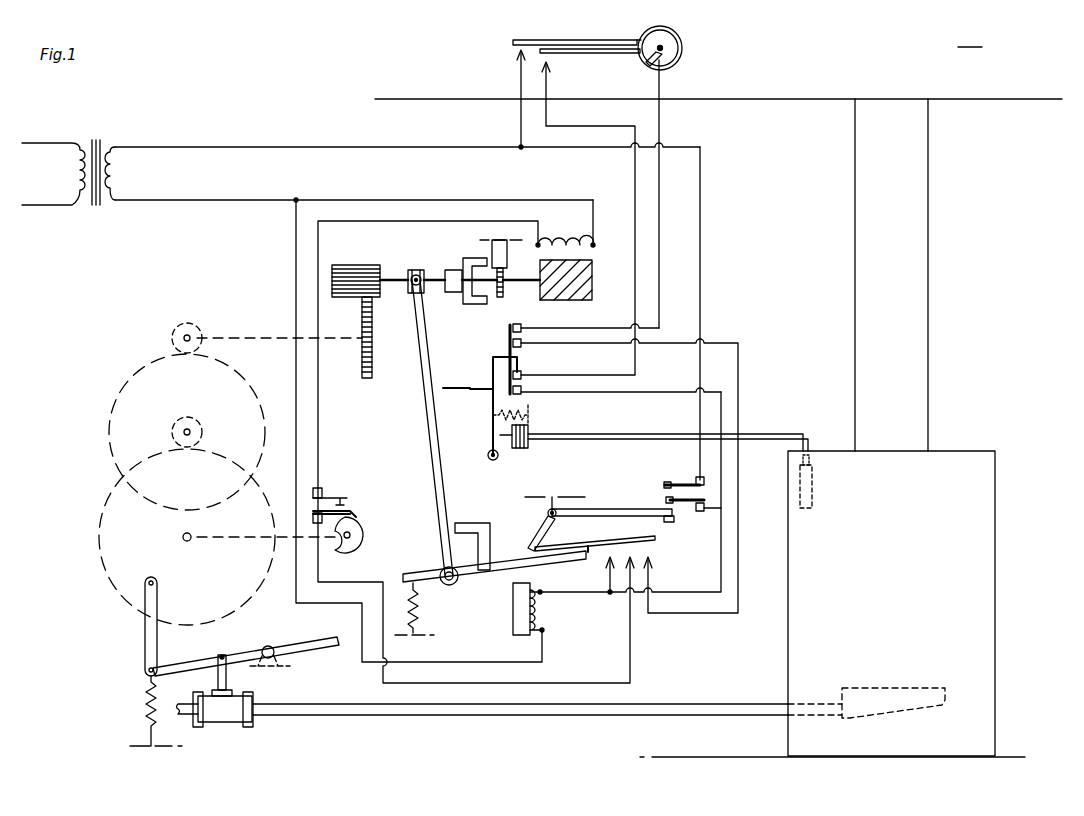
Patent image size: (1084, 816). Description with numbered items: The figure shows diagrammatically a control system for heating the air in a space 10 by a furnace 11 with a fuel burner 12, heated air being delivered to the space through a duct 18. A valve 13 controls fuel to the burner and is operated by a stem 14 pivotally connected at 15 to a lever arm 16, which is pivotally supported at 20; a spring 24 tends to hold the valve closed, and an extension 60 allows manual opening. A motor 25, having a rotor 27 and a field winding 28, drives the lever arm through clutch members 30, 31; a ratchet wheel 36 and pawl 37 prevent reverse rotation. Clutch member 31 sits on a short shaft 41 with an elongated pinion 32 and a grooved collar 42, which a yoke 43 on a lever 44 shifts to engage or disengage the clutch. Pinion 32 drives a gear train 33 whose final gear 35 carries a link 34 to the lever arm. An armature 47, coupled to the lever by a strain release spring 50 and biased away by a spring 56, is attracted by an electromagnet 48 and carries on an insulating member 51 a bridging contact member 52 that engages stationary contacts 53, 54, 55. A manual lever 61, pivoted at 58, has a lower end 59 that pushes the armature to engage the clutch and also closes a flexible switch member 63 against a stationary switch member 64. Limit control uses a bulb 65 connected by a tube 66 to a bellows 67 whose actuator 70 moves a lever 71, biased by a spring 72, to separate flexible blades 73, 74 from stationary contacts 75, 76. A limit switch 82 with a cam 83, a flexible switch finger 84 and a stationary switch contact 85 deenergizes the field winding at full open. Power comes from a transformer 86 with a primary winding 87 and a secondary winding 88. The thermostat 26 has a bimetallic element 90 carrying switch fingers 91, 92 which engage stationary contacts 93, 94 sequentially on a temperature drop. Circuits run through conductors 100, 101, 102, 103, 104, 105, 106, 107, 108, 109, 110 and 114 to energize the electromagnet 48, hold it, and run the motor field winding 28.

The space 10 is at (970, 39).
The furnace 11 is at (990, 518).
The fuel burner 12 is at (840, 690).
The valve 13 is at (228, 724).
The stem 14 is at (226, 678).
The pivotal connection 15 is at (222, 655).
The lever arm 16 is at (173, 662).
The duct 18 is at (930, 265).
The pivot 20 is at (274, 646).
The spring 24 is at (144, 706).
The motor 25 is at (612, 252).
The thermostat 26 is at (720, 43).
The rotor 27 is at (557, 301).
The field winding 28 is at (555, 243).
The clutch member 30 is at (474, 304).
The clutch member 31 is at (450, 292).
The elongated pinion 32 is at (358, 264).
The gear train 33 is at (235, 406).
The link 34 is at (144, 636).
The final gear 35 is at (100, 515).
The ratchet wheel 36 is at (503, 305).
The pawl 37 is at (507, 249).
The short shaft 41 is at (398, 285).
The grooved collar 42 is at (422, 270).
The yoke 43 is at (416, 270).
The lever 44 is at (426, 400).
The armature 47 is at (500, 576).
The electromagnet 48 is at (518, 637).
The strain release spring 50 is at (440, 572).
The insulating member 51 is at (591, 560).
The bridging contact member 52 is at (655, 537).
The stationary contact 53 is at (618, 574).
The stationary contact 54 is at (639, 569).
The stationary contact 55 is at (653, 556).
The spring 56 is at (420, 607).
The pivot 58 is at (557, 518).
The lower end 59 is at (533, 532).
The extension 60 is at (319, 652).
The manually operable lever 61 is at (609, 503).
The flexible switch member 63 is at (664, 476).
The stationary switch member 64 is at (683, 481).
The bulb 65 is at (814, 476).
The tube 66 is at (616, 436).
The bellows 67 is at (521, 461).
The actuator 70 is at (499, 466).
The lever 71 is at (490, 401).
The spring 72 is at (523, 401).
The flexible blade 73 is at (524, 390).
The flexible blade 74 is at (524, 336).
The stationary contact 75 is at (524, 373).
The stationary contact 76 is at (524, 350).
The limit switch 82 is at (369, 466).
The cam 83 is at (364, 524).
The flexible switch finger 84 is at (352, 509).
The stationary switch contact 85 is at (331, 496).
The transformer 86 is at (98, 138).
The primary winding 87 is at (76, 168).
The secondary winding 88 is at (121, 172).
The bimetallic element 90 is at (674, 30).
The movable switch finger 91 is at (547, 40).
The movable switch finger 92 is at (569, 55).
The stationary switch contact 93 is at (518, 51).
The stationary switch contact 94 is at (550, 65).
The conductor 100 is at (388, 148).
The conductor 101 is at (519, 117).
The conductor 102 is at (549, 117).
The conductor 103 is at (648, 396).
The conductor 104 is at (432, 650).
The conductor 105 is at (233, 204).
The conductor 106 is at (657, 347).
The conductor 107 is at (606, 582).
The conductor 108 is at (634, 657).
The conductor 109 is at (318, 414).
The conductor 110 is at (593, 207).
The conductor 114 is at (701, 180).